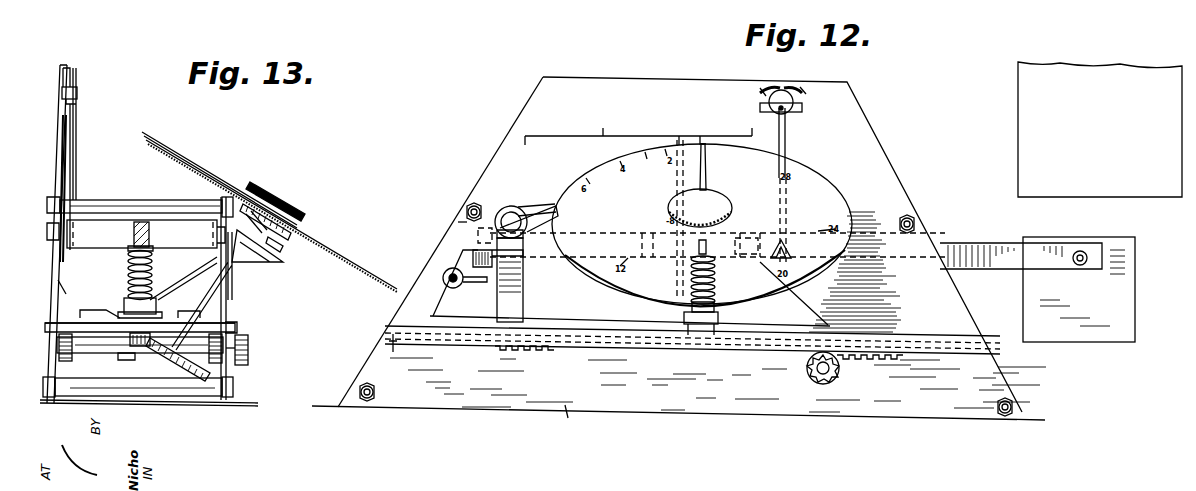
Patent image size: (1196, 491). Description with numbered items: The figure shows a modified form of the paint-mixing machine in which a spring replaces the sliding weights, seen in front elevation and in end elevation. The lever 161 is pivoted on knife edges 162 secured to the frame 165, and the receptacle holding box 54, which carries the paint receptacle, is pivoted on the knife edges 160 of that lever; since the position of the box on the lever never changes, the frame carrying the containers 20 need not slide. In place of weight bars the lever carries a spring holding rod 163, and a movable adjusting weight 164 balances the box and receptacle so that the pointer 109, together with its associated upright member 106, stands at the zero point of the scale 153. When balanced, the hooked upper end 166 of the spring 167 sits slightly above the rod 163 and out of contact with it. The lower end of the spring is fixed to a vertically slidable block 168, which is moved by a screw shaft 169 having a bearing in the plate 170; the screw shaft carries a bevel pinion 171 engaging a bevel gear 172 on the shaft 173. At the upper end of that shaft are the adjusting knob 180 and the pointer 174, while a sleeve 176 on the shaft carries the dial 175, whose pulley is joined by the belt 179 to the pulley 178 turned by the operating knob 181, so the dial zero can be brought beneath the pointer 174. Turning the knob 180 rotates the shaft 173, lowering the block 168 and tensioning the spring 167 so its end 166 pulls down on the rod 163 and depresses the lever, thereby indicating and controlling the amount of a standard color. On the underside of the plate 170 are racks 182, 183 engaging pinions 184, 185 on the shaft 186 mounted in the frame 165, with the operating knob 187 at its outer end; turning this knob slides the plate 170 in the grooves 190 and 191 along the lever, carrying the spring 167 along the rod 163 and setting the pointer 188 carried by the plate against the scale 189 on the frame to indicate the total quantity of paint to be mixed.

In FIG. 12, the container 20 is at (1030, 148).
In FIG. 12, the receptacle holding box 54 is at (1116, 338).
In FIG. 12, the rod 106 is at (786, 146).
In FIG. 13, the rod 106 is at (76, 127).
In FIG. 12, the pointer 109 is at (796, 98).
In FIG. 13, the pointer 109 is at (77, 84).
In FIG. 12, the scale 153 is at (806, 88).
In FIG. 12, the knife edges 160 is at (1083, 254).
In FIG. 12, the lever 161 is at (976, 243).
In FIG. 13, the lever 161 is at (97, 227).
In FIG. 12, the knife edges 162 is at (786, 239).
In FIG. 12, the spring holding rod 163 is at (744, 237).
In FIG. 13, the spring holding rod 163 is at (126, 252).
In FIG. 12, the adjusting weight 164 is at (458, 222).
In FIG. 12, the frame 165 is at (565, 418).
In FIG. 13, the frame 165 is at (226, 401).
In FIG. 12, the hooked upper end 166 is at (676, 242).
In FIG. 13, the hooked upper end 166 is at (151, 242).
In FIG. 12, the spring 167 is at (730, 298).
In FIG. 13, the spring 167 is at (153, 262).
In FIG. 13, the vertically slidable block 168 is at (158, 306).
In FIG. 13, the screw shaft 169 is at (117, 322).
In FIG. 12, the plate 170 is at (588, 330).
In FIG. 13, the plate 170 is at (72, 321).
In FIG. 13, the bevel pinion 171 is at (281, 246).
In FIG. 13, the bevel gear 172 is at (192, 369).
In FIG. 13, the shaft 173 is at (242, 278).
In FIG. 12, the pointer 174 is at (705, 162).
In FIG. 13, the pointer 174 is at (212, 167).
In FIG. 12, the dial 175 is at (716, 142).
In FIG. 13, the dial 175 is at (338, 258).
In FIG. 13, the sleeve 176 is at (233, 281).
In FIG. 12, the pulley 178 is at (500, 212).
In FIG. 12, the belt 179 is at (548, 203).
In FIG. 13, the belt 179 is at (295, 236).
In FIG. 12, the adjusting knob 180 is at (731, 203).
In FIG. 13, the adjusting knob 180 is at (268, 193).
In FIG. 12, the operating knob 181 is at (520, 212).
In FIG. 13, the rack 182 is at (140, 344).
In FIG. 12, the rack 183 is at (548, 345).
In FIG. 13, the rack 183 is at (235, 326).
In FIG. 13, the pinion 184 is at (68, 362).
In FIG. 12, the pinion 185 is at (840, 373).
In FIG. 13, the pinion 185 is at (234, 372).
In FIG. 12, the shaft 186 is at (806, 370).
In FIG. 13, the shaft 186 is at (128, 361).
In FIG. 12, the operating knob 187 is at (831, 380).
In FIG. 13, the operating knob 187 is at (249, 354).
In FIG. 12, the pointer 188 is at (676, 188).
In FIG. 13, the pointer 188 is at (67, 165).
In FIG. 12, the scale 189 is at (641, 135).
In FIG. 13, the groove 190 is at (62, 290).
In FIG. 12, the groove 191 is at (393, 353).
In FIG. 13, the groove 191 is at (240, 339).